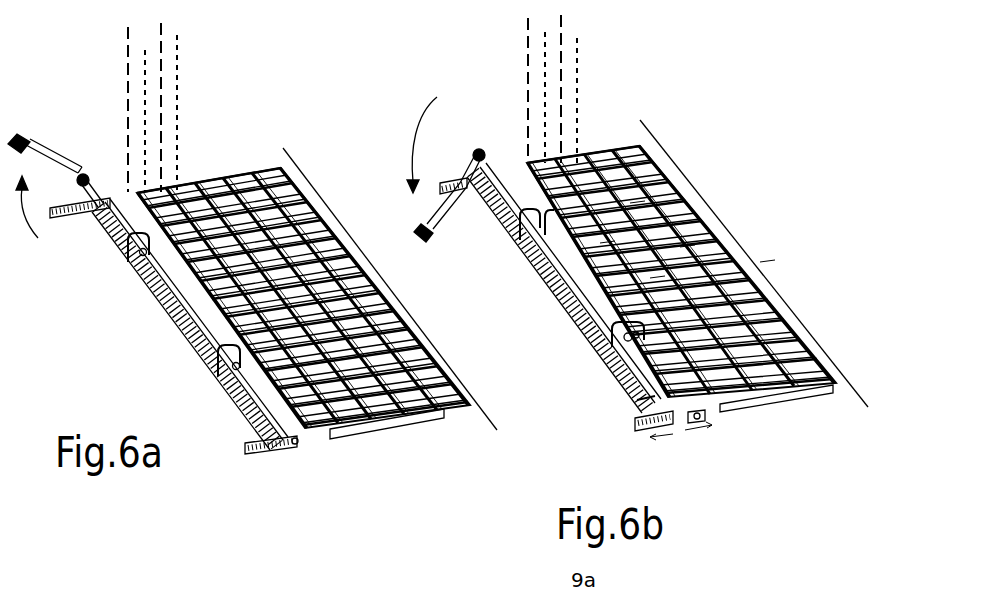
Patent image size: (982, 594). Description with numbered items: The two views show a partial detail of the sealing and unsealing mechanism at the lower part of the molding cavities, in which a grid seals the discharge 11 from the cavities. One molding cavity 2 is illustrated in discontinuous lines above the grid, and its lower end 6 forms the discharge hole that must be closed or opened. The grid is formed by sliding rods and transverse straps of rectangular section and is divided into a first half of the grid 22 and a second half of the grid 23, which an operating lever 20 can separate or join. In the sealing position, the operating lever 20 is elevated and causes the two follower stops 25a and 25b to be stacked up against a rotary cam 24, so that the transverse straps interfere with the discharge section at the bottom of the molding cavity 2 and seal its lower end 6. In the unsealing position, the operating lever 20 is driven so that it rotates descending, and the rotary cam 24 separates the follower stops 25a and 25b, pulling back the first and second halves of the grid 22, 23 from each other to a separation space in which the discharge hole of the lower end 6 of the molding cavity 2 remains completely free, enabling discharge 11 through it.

In FIG. 6A, the molding cavity 2 is at (161, 138).
In FIG. 6B, the molding cavity 2 is at (561, 114).
In FIG. 6A, the lower end 6 is at (172, 186).
In FIG. 6B, the lower end 6 is at (572, 158).
In FIG. 6A, the discharge 11 is at (376, 436).
In FIG. 6B, the discharge 11 is at (767, 413).
In FIG. 6A, the operating lever 20 is at (55, 158).
In FIG. 6B, the operating lever 20 is at (443, 222).
In FIG. 6A, the first half of the grid 22 is at (272, 450).
In FIG. 6B, the first half of the grid 22 is at (553, 276).
In FIG. 6A, the second half of the grid 23 is at (403, 423).
In FIG. 6B, the second half of the grid 23 is at (780, 404).
In FIG. 6A, the rotary cam 24 is at (165, 290).
In FIG. 6B, the rotary cam 24 is at (627, 375).
In FIG. 6A, the follower stop 25a is at (127, 256).
In FIG. 6B, the follower stop 25a is at (612, 340).
In FIG. 6A, the follower stop 25b is at (181, 325).
In FIG. 6B, the follower stop 25b is at (640, 395).